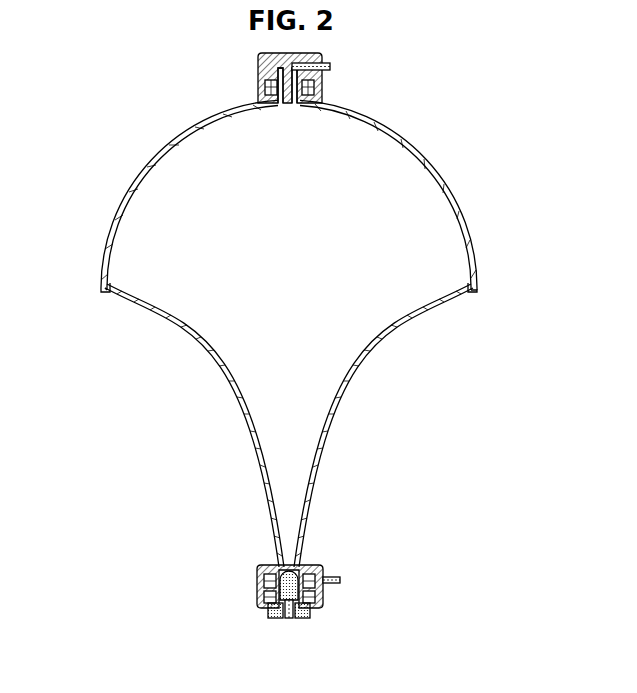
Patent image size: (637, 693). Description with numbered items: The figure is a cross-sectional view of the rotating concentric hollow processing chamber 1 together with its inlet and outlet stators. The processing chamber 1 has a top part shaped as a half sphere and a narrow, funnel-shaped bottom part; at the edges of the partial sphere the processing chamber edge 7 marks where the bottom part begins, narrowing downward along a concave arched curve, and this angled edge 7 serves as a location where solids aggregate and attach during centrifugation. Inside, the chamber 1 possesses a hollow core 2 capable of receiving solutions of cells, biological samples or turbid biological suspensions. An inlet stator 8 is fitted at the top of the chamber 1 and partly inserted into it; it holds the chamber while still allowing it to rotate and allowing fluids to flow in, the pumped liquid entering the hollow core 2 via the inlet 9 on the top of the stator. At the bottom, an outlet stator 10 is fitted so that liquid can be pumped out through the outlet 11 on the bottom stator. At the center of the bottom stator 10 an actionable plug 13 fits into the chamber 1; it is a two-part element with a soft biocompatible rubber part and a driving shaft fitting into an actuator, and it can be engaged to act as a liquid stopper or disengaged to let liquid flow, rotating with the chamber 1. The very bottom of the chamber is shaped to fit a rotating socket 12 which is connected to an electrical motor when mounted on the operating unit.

The rotating concentric hollow processing chamber 1 is at (161, 150).
The hollow core 2 is at (408, 185).
The processing chamber edge 7 is at (102, 290).
The inlet stator 8 is at (258, 73).
The inlet 9 is at (330, 67).
The outlet stator 10 is at (258, 590).
The outlet 11 is at (340, 580).
The rotating socket 12 is at (302, 620).
The actionable plug 13 is at (288, 622).